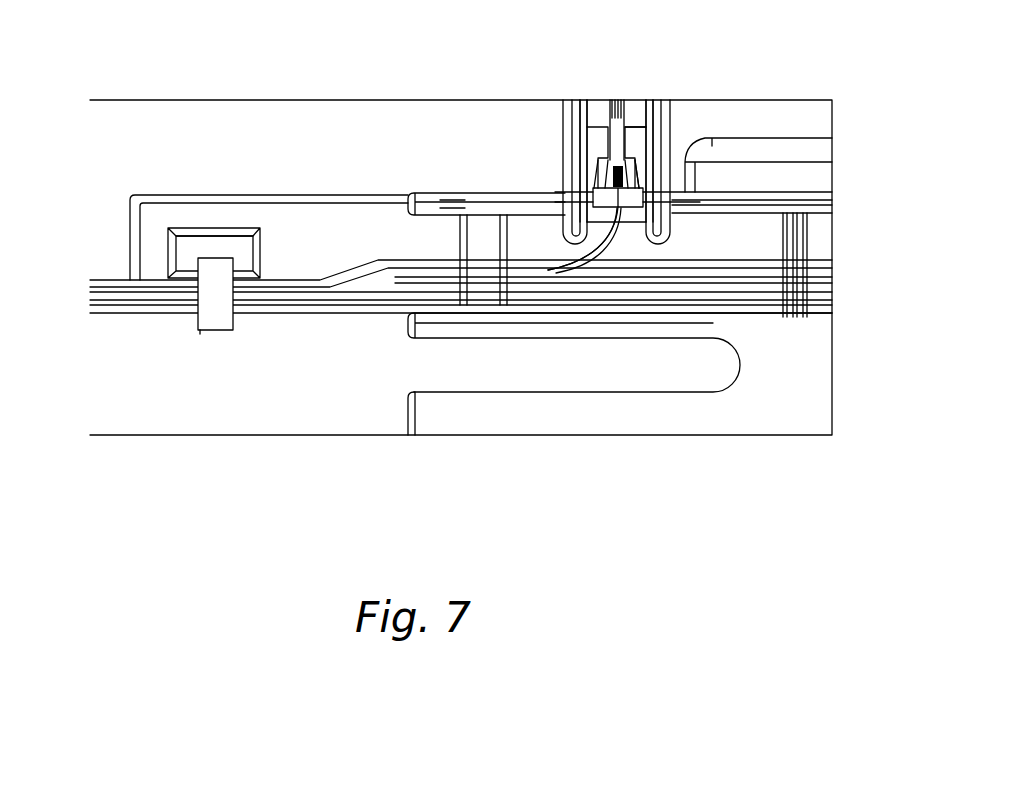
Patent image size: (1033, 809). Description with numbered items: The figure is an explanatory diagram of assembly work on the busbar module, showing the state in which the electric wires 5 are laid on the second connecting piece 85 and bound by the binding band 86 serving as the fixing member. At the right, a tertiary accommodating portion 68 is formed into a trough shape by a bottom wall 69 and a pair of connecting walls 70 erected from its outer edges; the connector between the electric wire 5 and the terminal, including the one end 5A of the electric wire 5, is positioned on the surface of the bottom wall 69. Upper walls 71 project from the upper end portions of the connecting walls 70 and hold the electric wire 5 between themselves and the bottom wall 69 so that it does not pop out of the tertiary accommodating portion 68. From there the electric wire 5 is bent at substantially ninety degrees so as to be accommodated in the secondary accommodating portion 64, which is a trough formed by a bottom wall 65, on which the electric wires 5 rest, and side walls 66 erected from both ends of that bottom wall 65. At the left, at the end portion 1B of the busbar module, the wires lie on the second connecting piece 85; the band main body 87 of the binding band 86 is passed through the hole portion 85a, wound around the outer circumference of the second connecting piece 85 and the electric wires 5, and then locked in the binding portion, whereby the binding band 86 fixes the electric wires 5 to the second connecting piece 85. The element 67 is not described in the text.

The end portion of the busbar module 1B is at (133, 196).
The electric wire 5 is at (118, 318).
The one end of the electric wire 5A is at (621, 209).
The secondary accommodating portion 64 is at (479, 36).
The bottom wall 65 is at (417, 237).
The side wall 66 is at (447, 202).
The partition plate 67 is at (488, 410).
The tertiary accommodating portion 68 is at (700, 22).
The bottom wall 69 is at (648, 118).
The connecting wall 70 is at (675, 115).
The upper wall 71 is at (592, 145).
The second connecting piece 85 is at (242, 213).
The hole portion 85a is at (222, 236).
The binding band 86 is at (200, 336).
The band main body 87 is at (222, 318).